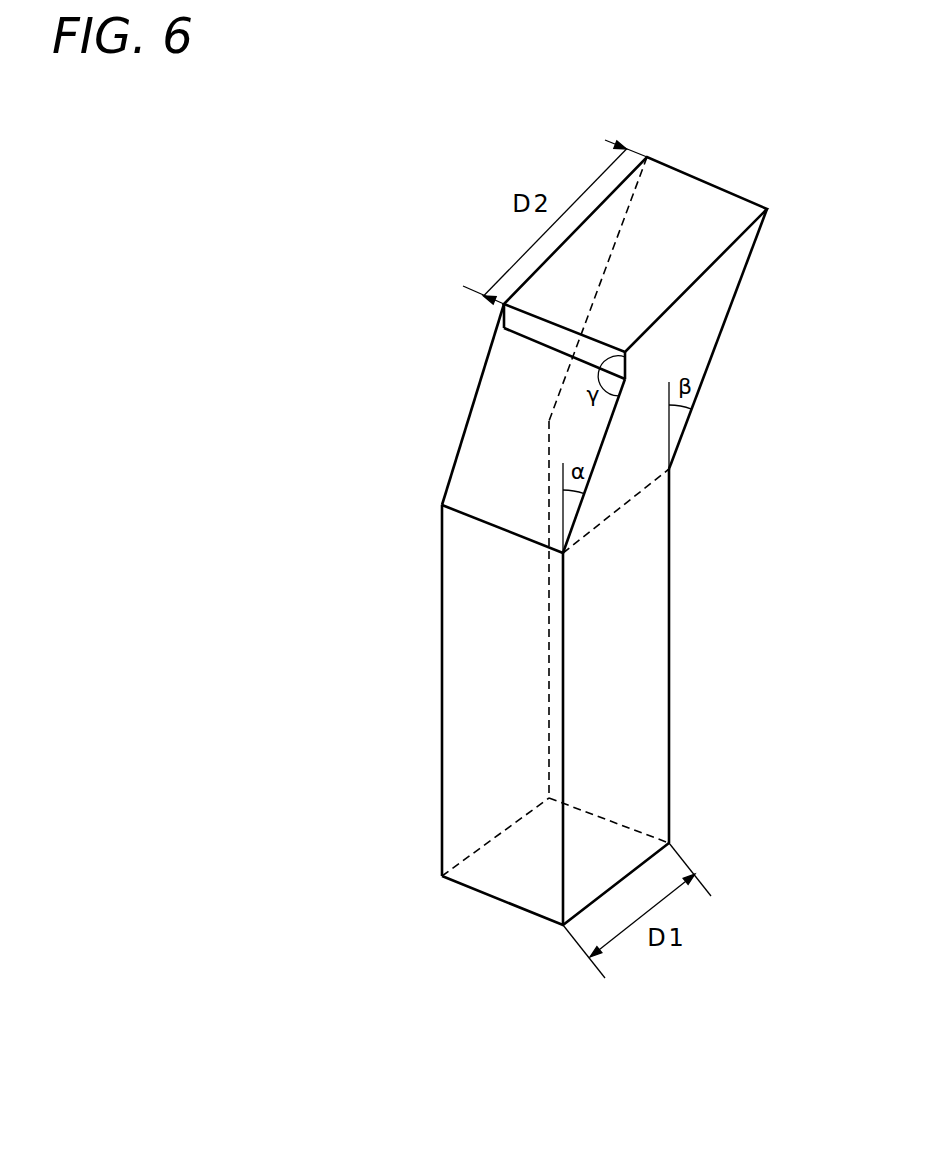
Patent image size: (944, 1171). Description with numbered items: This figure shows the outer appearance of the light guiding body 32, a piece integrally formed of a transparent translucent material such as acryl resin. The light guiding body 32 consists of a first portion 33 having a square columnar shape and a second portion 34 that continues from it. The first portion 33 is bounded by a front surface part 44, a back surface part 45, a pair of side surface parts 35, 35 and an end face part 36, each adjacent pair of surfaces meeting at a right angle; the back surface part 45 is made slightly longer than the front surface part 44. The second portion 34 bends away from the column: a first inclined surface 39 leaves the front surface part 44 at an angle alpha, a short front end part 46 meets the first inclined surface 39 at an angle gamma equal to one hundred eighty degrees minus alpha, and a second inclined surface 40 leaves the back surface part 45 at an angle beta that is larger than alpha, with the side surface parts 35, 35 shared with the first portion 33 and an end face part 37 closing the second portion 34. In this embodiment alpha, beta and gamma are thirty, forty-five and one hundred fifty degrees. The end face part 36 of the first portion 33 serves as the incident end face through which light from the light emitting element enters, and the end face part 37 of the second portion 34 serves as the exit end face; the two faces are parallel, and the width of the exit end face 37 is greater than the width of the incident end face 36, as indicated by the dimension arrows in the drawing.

The light guiding body 32 is at (212, 393).
The first portion 33 is at (435, 770).
The second portion 34 is at (467, 413).
The side surface parts 35 is at (440, 550).
The end face part 36 is at (510, 878).
The end face part 37 is at (723, 223).
The first inclined surface 39 is at (470, 468).
The second inclined surface 40 is at (700, 393).
The front surface part 44 is at (478, 657).
The back surface part 45 is at (672, 682).
The front end part 46 is at (504, 316).